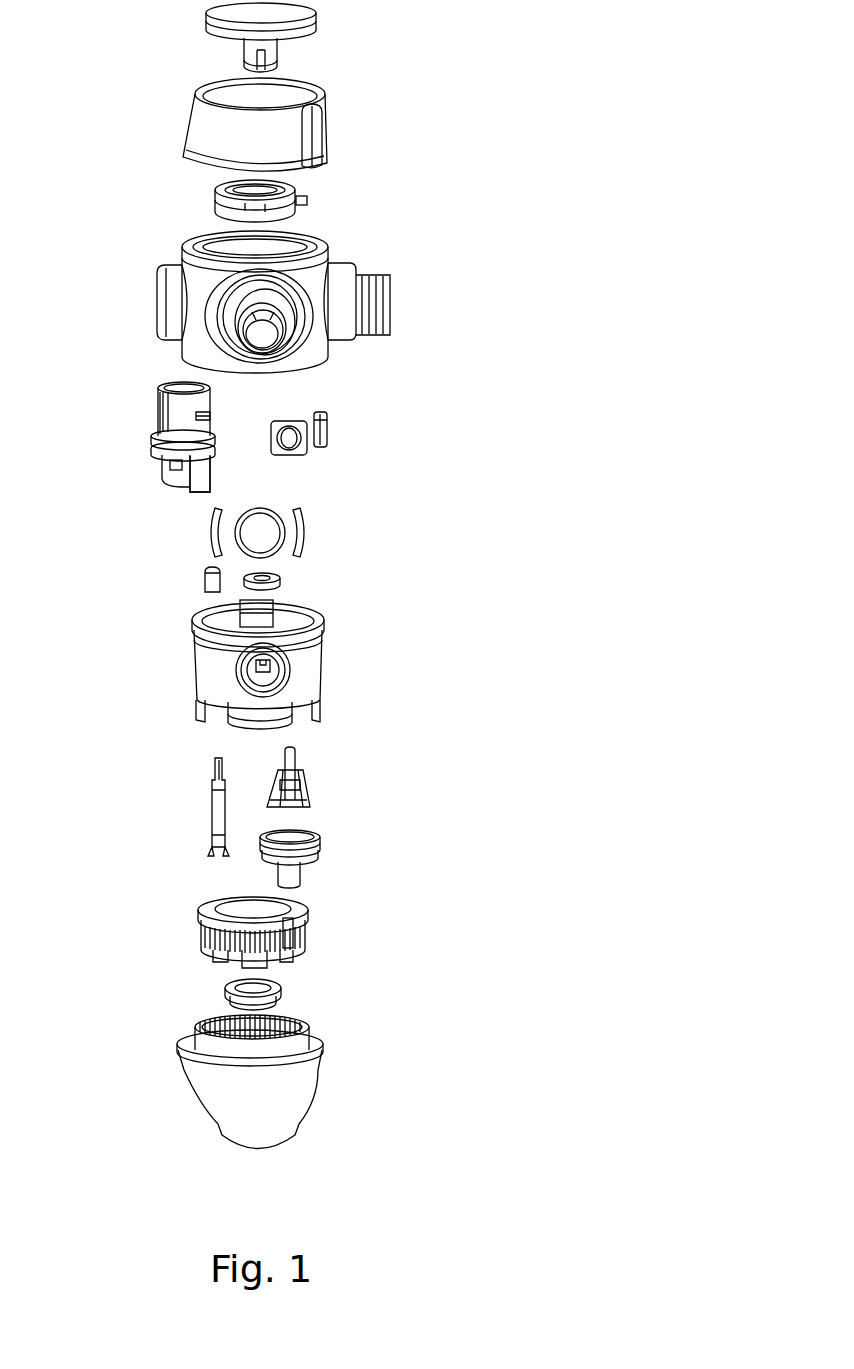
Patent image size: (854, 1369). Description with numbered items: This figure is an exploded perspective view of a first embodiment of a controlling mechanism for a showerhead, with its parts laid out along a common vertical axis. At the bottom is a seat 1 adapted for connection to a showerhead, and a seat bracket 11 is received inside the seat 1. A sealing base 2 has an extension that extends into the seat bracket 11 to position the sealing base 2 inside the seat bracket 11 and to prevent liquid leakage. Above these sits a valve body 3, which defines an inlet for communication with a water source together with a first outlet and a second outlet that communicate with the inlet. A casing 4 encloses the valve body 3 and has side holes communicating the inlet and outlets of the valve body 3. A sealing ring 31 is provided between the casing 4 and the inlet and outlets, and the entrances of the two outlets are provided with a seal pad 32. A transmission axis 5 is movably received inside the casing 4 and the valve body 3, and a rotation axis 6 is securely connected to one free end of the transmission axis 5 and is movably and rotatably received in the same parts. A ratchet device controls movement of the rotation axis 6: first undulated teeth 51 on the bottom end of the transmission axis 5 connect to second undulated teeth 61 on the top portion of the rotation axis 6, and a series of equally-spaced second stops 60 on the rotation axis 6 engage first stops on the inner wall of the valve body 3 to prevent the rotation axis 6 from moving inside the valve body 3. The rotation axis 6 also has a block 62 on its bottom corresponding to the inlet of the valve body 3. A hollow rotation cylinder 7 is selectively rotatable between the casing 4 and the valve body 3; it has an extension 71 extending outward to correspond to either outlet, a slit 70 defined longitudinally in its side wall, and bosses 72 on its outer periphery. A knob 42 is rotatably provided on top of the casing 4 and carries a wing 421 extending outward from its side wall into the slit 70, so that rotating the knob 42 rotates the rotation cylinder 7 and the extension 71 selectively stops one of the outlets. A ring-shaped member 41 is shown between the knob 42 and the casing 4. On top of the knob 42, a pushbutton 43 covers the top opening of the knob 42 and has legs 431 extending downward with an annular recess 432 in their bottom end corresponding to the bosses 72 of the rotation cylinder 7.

The seat 1 is at (320, 1073).
The seat bracket 11 is at (305, 932).
The sealing base 2 is at (320, 858).
The valve body 3 is at (312, 665).
The sealing ring 31 is at (235, 530).
The seal pad 32 is at (328, 428).
The casing 4 is at (390, 303).
The retaining ring 41 is at (212, 203).
The knob 42 is at (328, 137).
The wing 421 is at (320, 165).
The pushbutton 43 is at (318, 18).
The legs 431 is at (248, 47).
The annular recess 432 is at (278, 62).
The transmission axis 5 is at (142, 812).
The first undulated teeth 51 is at (207, 848).
The rotation axis 6 is at (338, 770).
The second stops 60 is at (278, 782).
The second undulated teeth 61 is at (292, 770).
The block 62 is at (312, 800).
The rotation cylinder 7 is at (160, 412).
The slit 70 is at (190, 428).
The extension 71 is at (200, 480).
The bosses 72 is at (212, 417).